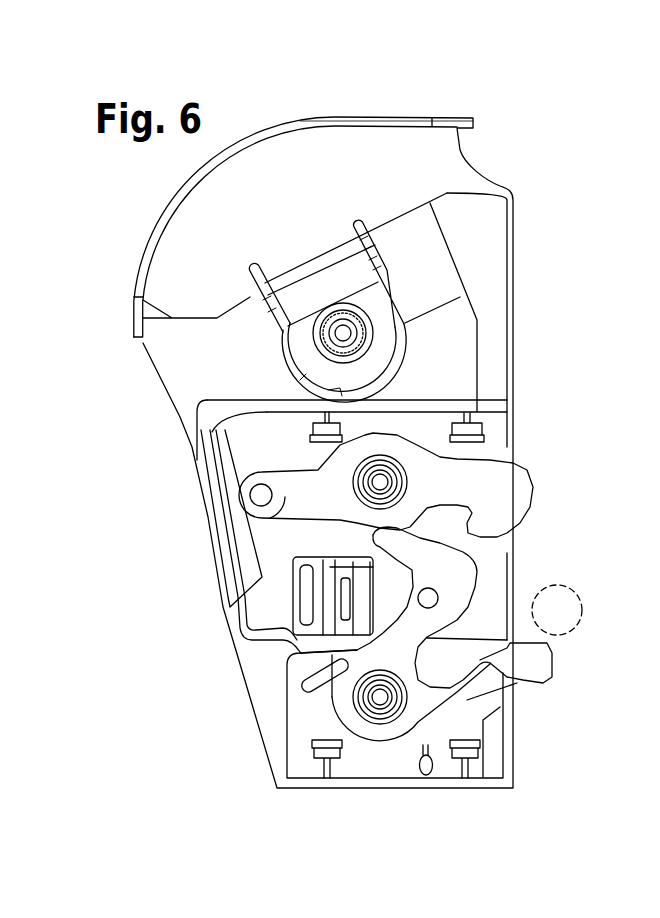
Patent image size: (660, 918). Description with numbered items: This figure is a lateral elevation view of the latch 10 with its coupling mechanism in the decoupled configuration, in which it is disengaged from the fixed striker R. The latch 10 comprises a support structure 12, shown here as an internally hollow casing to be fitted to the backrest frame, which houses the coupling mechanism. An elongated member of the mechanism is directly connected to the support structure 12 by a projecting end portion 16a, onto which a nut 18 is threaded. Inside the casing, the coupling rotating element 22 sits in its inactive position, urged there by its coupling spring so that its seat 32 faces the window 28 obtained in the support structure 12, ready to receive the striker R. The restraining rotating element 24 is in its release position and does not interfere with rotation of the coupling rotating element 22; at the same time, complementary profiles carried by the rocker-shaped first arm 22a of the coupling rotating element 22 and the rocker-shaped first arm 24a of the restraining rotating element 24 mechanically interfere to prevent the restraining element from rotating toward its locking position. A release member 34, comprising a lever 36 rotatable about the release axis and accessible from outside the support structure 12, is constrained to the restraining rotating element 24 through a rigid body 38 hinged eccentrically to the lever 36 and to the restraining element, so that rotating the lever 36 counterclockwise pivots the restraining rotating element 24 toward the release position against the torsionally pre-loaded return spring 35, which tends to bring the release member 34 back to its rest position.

The latch 10 is at (496, 106).
The support structure 12 is at (472, 163).
The portion of the elongated member 16a is at (400, 489).
The nut 18 is at (405, 484).
The coupling rotating element 22 is at (443, 718).
The first arm of the coupling rotating element 22a is at (360, 637).
The restraining rotating element 24 is at (515, 488).
The first arm of the restraining rotating element 24a is at (280, 500).
The window 28 is at (527, 553).
The seat 32 is at (483, 665).
The release member 34 is at (253, 293).
The return spring 35 is at (400, 332).
The lever 36 is at (280, 330).
The rigid body 38 is at (255, 458).
The striker R is at (573, 593).